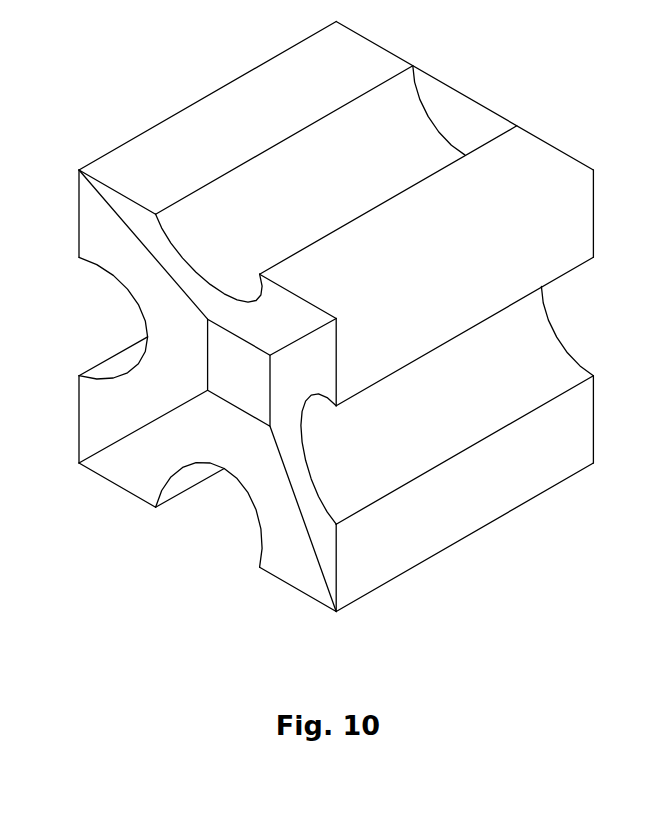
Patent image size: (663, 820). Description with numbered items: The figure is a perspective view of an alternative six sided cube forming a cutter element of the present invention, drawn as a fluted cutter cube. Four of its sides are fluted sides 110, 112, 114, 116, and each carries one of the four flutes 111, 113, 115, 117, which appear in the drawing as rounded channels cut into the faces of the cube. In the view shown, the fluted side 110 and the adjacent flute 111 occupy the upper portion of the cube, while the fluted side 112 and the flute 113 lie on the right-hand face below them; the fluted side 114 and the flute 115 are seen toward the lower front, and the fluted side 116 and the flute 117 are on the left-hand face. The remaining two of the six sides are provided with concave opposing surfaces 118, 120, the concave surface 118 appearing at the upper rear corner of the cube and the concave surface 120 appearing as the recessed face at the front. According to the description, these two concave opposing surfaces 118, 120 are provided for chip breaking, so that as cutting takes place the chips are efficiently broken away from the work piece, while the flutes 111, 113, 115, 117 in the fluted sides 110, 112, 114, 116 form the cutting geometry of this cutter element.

The fluted side 110 is at (406, 244).
The flute 111 is at (305, 192).
The fluted side 112 is at (442, 506).
The flute 113 is at (430, 416).
The fluted side 114 is at (290, 588).
The flute 115 is at (250, 500).
The fluted side 116 is at (78, 225).
The flute 117 is at (128, 292).
The concave surface 118 is at (397, 54).
The concave surface 120 is at (224, 386).